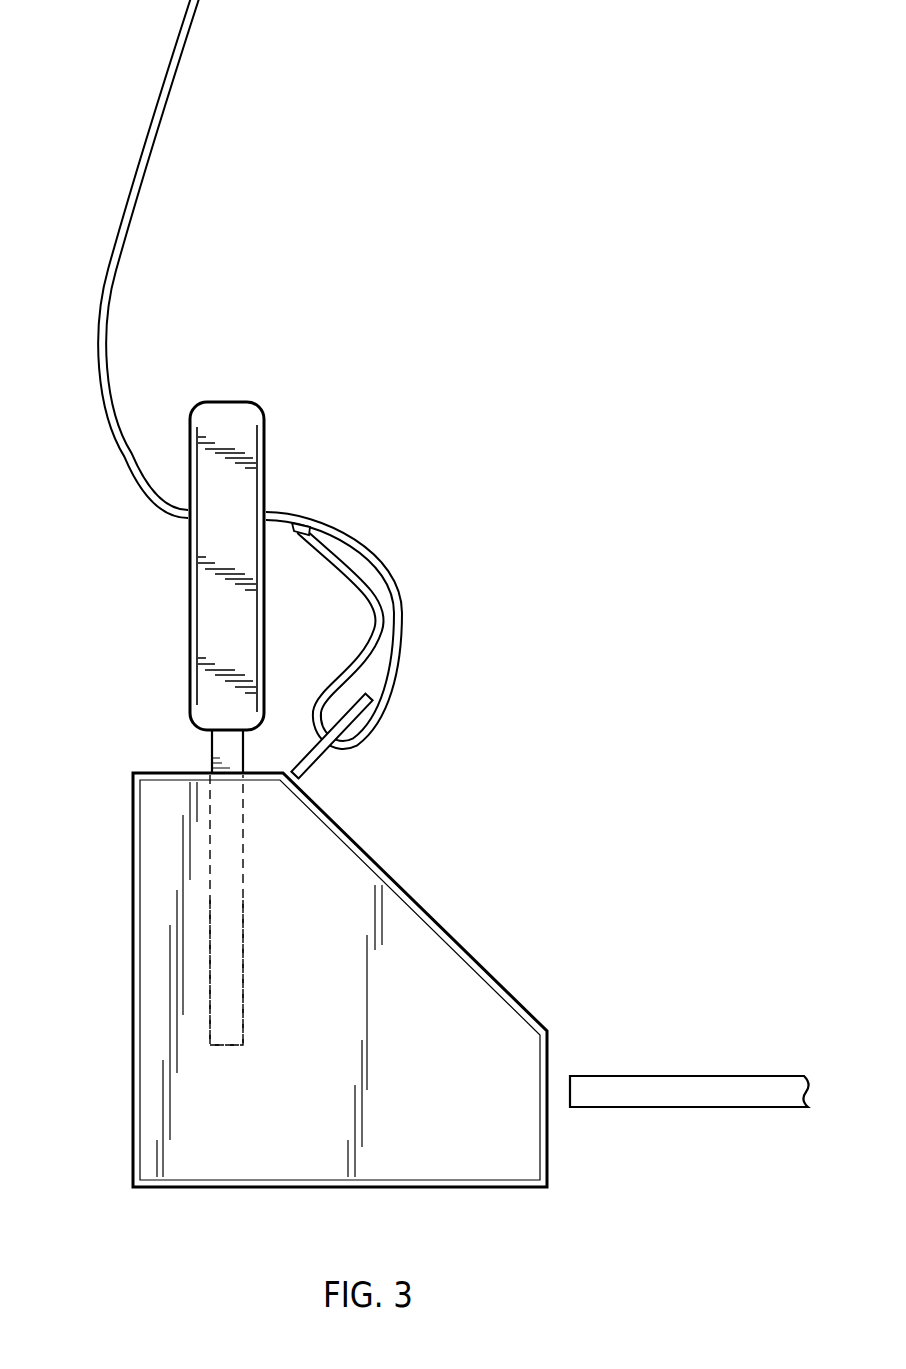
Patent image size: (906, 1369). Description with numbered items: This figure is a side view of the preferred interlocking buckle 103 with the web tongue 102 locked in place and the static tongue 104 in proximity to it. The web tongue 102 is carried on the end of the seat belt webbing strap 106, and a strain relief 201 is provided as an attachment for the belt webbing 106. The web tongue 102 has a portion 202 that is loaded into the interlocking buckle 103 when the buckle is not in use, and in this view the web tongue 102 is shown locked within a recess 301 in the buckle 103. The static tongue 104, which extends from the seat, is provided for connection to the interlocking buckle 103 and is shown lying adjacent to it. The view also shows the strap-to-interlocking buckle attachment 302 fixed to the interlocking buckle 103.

The seat belt webbing strap 106 is at (134, 192).
The strain relief 201 is at (240, 491).
The web tongue 102 is at (215, 752).
The strap-to-interlocking buckle attachment 302 is at (323, 752).
The interlocking buckle 103 is at (400, 928).
The static tongue 104 is at (707, 1082).
The portion 202 is at (215, 903).
The recess 301 is at (212, 977).